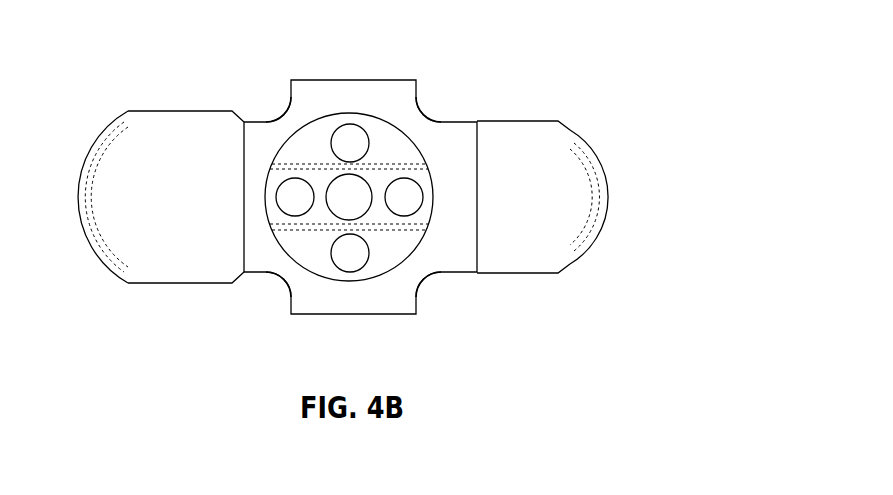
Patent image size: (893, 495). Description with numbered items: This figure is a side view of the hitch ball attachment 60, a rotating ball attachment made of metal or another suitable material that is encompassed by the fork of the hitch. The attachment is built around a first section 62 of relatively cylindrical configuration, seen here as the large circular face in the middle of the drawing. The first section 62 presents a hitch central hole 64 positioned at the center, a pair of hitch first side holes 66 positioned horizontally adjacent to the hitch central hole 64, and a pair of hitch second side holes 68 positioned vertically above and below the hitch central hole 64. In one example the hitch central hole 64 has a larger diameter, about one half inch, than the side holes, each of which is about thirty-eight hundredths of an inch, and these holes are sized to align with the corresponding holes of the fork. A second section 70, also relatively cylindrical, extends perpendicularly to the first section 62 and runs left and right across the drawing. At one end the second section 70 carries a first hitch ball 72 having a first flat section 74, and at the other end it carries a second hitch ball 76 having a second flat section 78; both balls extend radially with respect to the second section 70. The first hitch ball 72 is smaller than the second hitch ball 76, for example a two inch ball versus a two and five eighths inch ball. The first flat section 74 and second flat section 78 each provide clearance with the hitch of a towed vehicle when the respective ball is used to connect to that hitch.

The hitch ball attachment 60 is at (682, 64).
The first section 62 is at (318, 259).
The hitch central hole 64 is at (359, 197).
The hitch first side holes 66 is at (405, 203).
The hitch second side holes 68 is at (349, 140).
The second section 70 is at (437, 133).
The first hitch ball 72 is at (567, 153).
The first flat section 74 is at (503, 118).
The second hitch ball 76 is at (145, 173).
The second flat section 78 is at (180, 110).